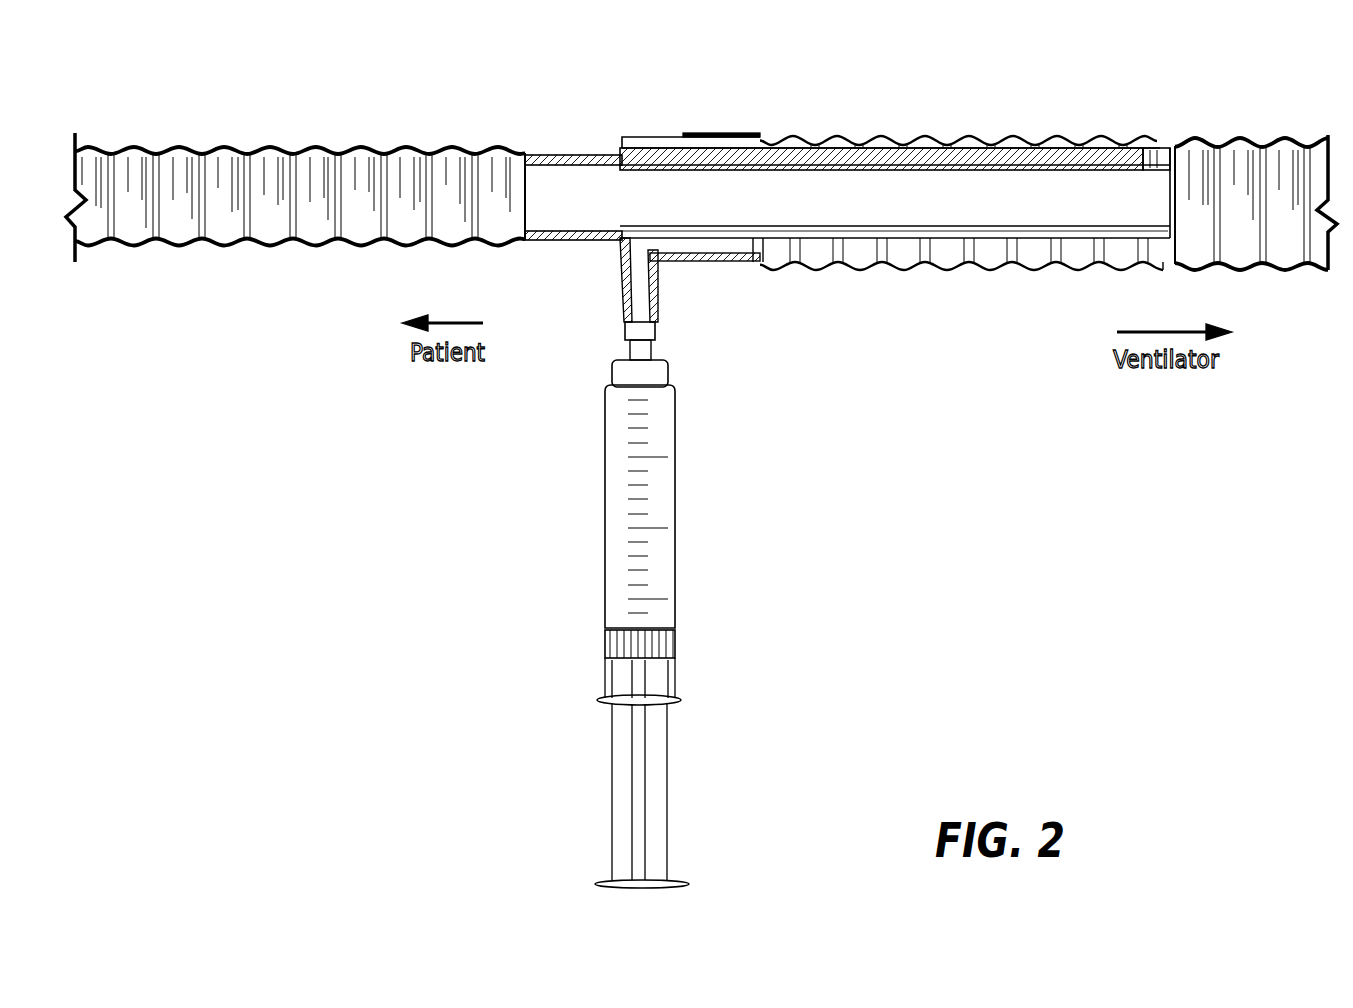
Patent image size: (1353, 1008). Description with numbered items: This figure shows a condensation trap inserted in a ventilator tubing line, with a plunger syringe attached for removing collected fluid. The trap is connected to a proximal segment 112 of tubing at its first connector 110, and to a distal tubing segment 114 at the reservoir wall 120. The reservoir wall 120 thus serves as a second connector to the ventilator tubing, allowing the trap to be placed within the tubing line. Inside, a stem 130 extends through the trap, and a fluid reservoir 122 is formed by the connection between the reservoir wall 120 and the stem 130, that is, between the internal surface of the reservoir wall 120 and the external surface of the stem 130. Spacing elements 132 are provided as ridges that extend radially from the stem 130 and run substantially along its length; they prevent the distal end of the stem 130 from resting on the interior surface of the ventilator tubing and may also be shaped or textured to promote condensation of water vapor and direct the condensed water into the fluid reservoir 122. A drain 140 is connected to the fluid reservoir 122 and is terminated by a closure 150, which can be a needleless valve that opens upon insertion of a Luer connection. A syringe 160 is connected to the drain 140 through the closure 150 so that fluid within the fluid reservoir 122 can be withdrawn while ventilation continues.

The first connector 110 is at (608, 153).
The proximal segment 112 is at (469, 148).
The distal tubing segment 114 is at (831, 140).
The reservoir wall 120 is at (641, 143).
The fluid reservoir 122 is at (718, 243).
The stem 130 is at (1160, 170).
The spacing elements 132 is at (988, 165).
The drain 140 is at (655, 322).
The closure 150 is at (640, 328).
The syringe 160 is at (676, 556).